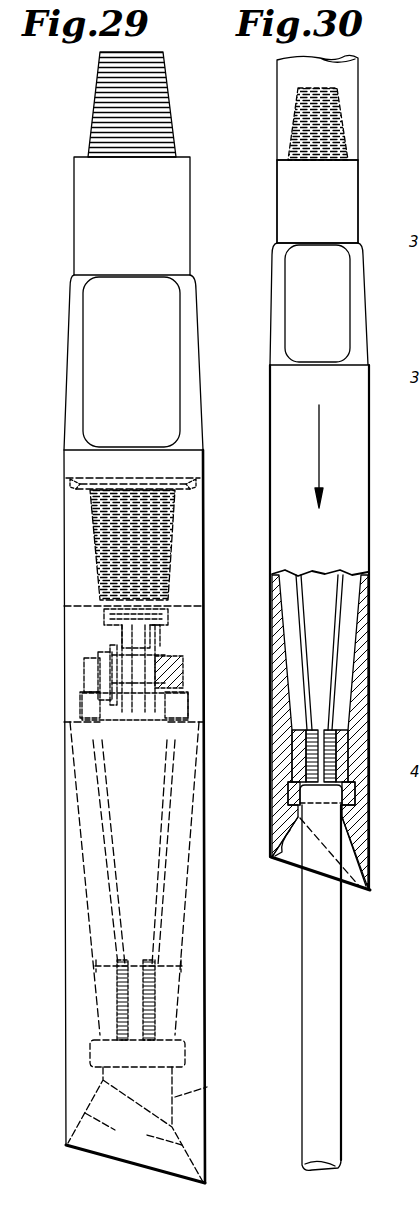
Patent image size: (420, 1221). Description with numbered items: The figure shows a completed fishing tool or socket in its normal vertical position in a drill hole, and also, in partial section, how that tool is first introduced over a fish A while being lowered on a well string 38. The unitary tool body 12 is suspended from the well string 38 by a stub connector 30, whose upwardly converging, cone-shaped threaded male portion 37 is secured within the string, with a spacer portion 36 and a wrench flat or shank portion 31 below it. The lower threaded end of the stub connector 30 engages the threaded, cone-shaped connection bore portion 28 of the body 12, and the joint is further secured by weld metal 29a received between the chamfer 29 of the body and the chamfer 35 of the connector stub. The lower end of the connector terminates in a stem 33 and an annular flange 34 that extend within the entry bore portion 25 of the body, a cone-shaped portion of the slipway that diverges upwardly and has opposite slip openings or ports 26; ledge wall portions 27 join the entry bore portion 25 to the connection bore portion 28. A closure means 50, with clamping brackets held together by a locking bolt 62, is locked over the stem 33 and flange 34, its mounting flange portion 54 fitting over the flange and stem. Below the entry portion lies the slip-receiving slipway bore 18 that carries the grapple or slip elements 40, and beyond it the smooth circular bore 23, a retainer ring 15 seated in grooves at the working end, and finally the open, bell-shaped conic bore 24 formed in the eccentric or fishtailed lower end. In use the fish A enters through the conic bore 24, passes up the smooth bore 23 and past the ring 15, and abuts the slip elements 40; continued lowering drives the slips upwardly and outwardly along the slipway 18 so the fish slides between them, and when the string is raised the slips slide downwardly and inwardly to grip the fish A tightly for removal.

In FIG. 29, the tool body 12 is at (205, 695).
In FIG. 30, the tool body 12 is at (372, 426).
In FIG. 29, the retainer ring 15 is at (123, 1067).
In FIG. 30, the retainer ring 15 is at (290, 792).
In FIG. 29, the slipway bore 18 is at (182, 835).
In FIG. 30, the slipway bore 18 is at (352, 600).
In FIG. 29, the smooth bore 23 is at (180, 1097).
In FIG. 30, the smooth bore 23 is at (338, 818).
In FIG. 29, the conic bore 24 is at (146, 1116).
In FIG. 30, the conic bore 24 is at (276, 860).
In FIG. 29, the entry bore portion 25 is at (78, 670).
In FIG. 29, the slip openings 26 is at (72, 704).
In FIG. 29, the ledge wall portions 27 is at (80, 605).
In FIG. 29, the connection bore portion 28 is at (97, 540).
In FIG. 29, the weld chamfer of body 29 is at (200, 484).
In FIG. 29, the weld metal 29a is at (72, 487).
In FIG. 29, the stub connector 30 is at (70, 300).
In FIG. 30, the stub connector 30 is at (274, 248).
In FIG. 29, the wrench flat portion 31 is at (98, 364).
In FIG. 30, the wrench flat portion 31 is at (294, 302).
In FIG. 29, the stem 33 is at (106, 618).
In FIG. 29, the annular flange 34 is at (100, 627).
In FIG. 29, the weld chamfer of connector stub 35 is at (70, 479).
In FIG. 29, the spacer portion 36 is at (74, 199).
In FIG. 30, the spacer portion 36 is at (277, 176).
In FIG. 29, the threaded male portion 37 is at (100, 94).
In FIG. 30, the threaded male portion 37 is at (297, 118).
In FIG. 30, the well string 38 is at (358, 100).
In FIG. 29, the slip elements 40 is at (142, 950).
In FIG. 30, the slip elements 40 is at (300, 738).
In FIG. 29, the closure means 50 is at (84, 703).
In FIG. 29, the mounting flange portion 54 is at (178, 622).
In FIG. 29, the locking bolt 62 is at (186, 668).
In FIG. 30, the fish A is at (343, 992).